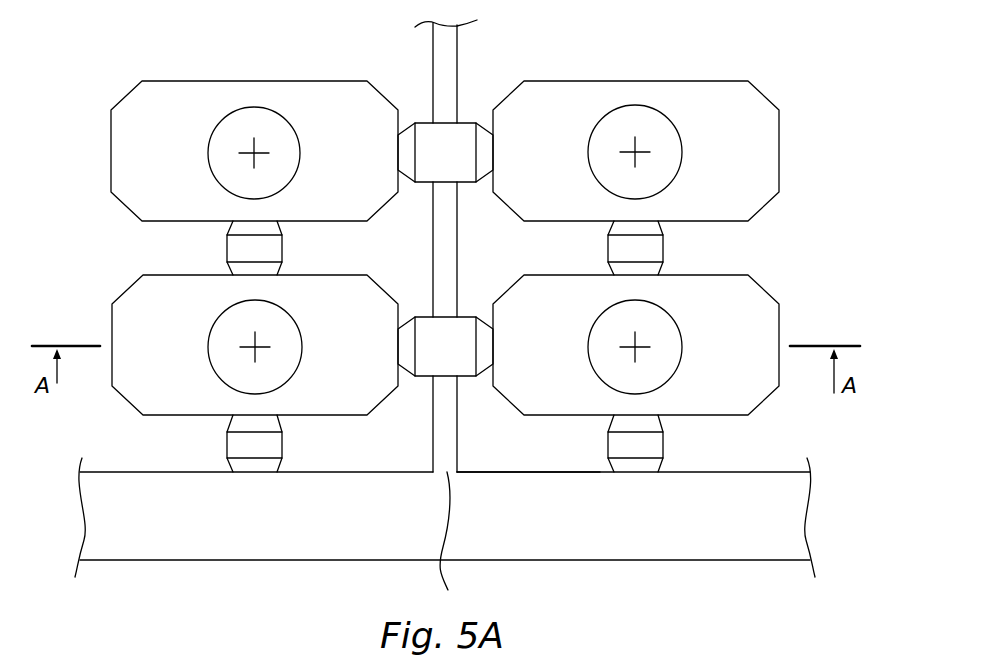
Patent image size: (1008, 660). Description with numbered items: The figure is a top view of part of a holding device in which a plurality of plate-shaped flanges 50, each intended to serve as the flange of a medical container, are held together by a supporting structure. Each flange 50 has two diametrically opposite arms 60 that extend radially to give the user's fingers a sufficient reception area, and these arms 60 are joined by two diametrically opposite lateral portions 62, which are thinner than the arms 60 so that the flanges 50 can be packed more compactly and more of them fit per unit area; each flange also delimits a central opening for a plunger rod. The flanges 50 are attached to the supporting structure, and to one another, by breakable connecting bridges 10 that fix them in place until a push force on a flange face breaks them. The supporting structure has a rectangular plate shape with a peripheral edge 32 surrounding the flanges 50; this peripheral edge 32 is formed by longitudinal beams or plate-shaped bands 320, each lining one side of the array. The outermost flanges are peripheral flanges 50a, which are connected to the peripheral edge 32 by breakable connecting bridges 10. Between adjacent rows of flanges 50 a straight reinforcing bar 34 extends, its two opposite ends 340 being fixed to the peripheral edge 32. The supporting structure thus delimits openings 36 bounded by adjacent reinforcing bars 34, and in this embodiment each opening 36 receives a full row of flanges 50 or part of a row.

The breakable connecting bridge 10 is at (270, 250).
The peripheral edge 32 is at (445, 523).
The plate-shaped band 320 is at (624, 536).
The reinforcing bar 34 is at (471, 50).
The opening 36 is at (498, 447).
The end of reinforcing bar 340 is at (466, 535).
The flange 50 is at (803, 147).
The peripheral flange 50a is at (145, 386).
The arm 60 is at (162, 110).
The lateral portion 62 is at (252, 98).